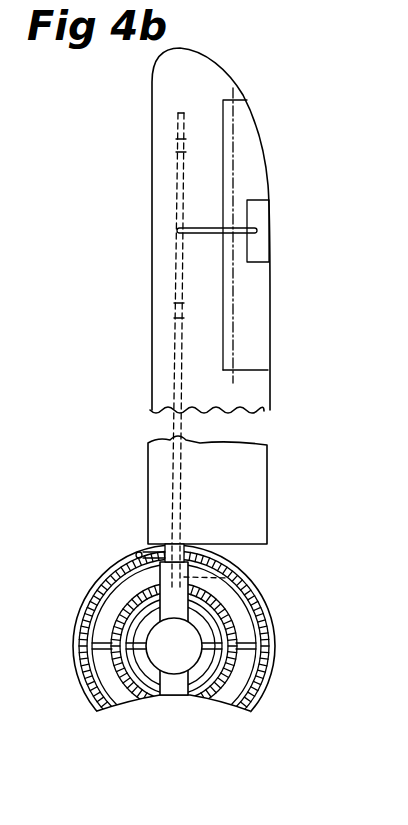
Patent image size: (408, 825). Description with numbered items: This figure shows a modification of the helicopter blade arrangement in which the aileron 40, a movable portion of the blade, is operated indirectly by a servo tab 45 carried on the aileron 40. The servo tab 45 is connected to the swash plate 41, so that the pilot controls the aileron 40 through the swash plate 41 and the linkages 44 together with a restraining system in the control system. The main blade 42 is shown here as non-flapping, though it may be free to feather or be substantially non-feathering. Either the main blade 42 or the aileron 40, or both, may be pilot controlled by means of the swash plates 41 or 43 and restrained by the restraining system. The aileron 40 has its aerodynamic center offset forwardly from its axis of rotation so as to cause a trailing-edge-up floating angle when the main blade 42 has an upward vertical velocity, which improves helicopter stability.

The aileron 40 is at (270, 184).
The servo tab 45 is at (263, 245).
The blade 42 is at (140, 412).
The linkages 44 is at (248, 562).
The swash plate 41 is at (233, 620).
The swash plate 43 is at (273, 681).